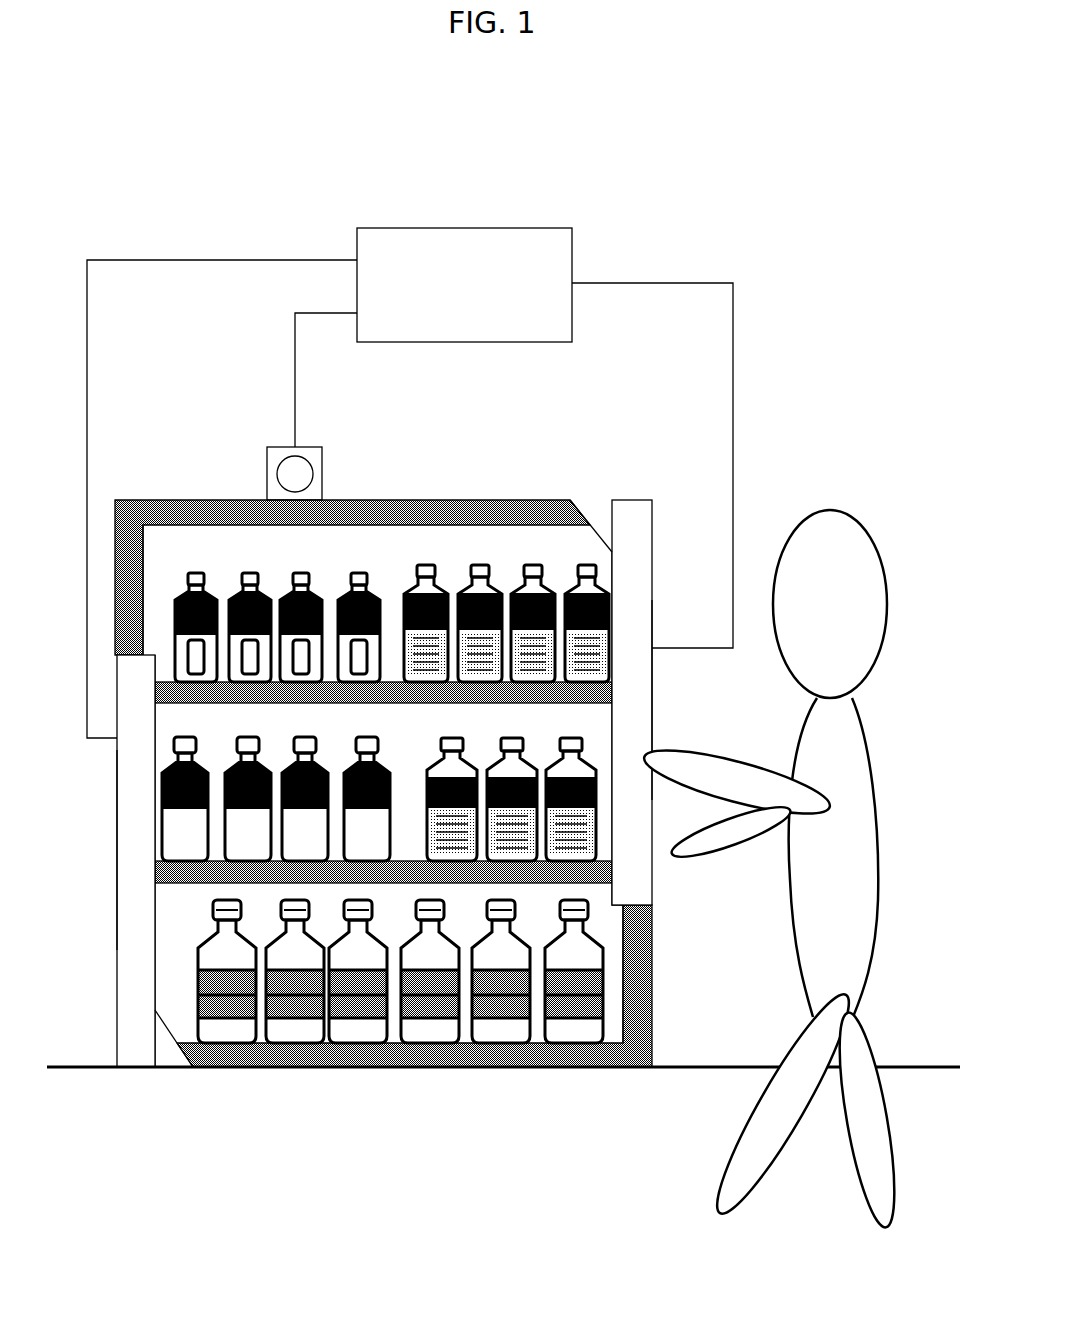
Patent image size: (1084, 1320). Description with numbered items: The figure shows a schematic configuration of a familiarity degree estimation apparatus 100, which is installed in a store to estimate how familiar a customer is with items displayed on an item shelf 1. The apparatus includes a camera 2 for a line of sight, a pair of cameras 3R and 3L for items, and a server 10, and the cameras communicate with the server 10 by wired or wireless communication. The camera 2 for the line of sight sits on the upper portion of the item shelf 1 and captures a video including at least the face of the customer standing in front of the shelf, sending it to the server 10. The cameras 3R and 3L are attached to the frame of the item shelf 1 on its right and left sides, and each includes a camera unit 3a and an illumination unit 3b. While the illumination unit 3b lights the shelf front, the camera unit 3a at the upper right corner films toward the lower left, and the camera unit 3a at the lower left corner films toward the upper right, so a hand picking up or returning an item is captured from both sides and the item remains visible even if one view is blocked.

The familiarity degree estimation apparatus 100 is at (423, 141).
The server 10 is at (464, 228).
The camera for a line of sight 2 is at (310, 450).
The item shelf 1 is at (174, 498).
The camera for items 3R is at (637, 485).
The camera for items 3L is at (105, 990).
The camera unit 3a is at (589, 506).
The illumination unit 3b is at (647, 728).